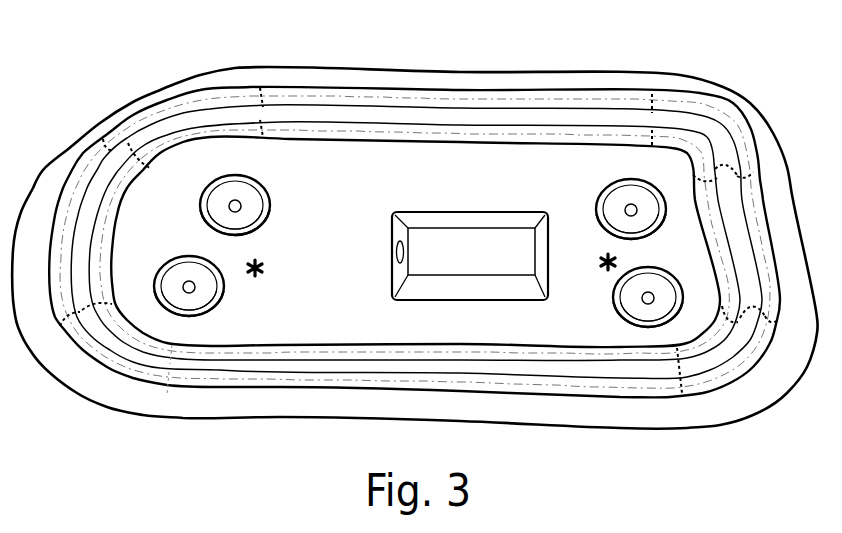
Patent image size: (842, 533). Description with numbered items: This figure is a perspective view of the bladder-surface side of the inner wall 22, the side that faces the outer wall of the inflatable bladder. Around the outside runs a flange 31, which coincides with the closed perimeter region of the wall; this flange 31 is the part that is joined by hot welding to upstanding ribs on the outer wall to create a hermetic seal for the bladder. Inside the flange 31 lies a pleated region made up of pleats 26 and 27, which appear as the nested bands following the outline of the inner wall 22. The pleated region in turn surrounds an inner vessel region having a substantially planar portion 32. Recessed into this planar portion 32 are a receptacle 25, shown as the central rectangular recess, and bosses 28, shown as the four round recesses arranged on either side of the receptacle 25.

The inner wall 22 is at (670, 72).
The receptacle 25 is at (427, 288).
The pleat 26 is at (312, 135).
The pleat 27 is at (212, 100).
The bosses 28 is at (230, 218).
The flange 31 is at (430, 79).
The substantially planar portion 32 is at (290, 320).